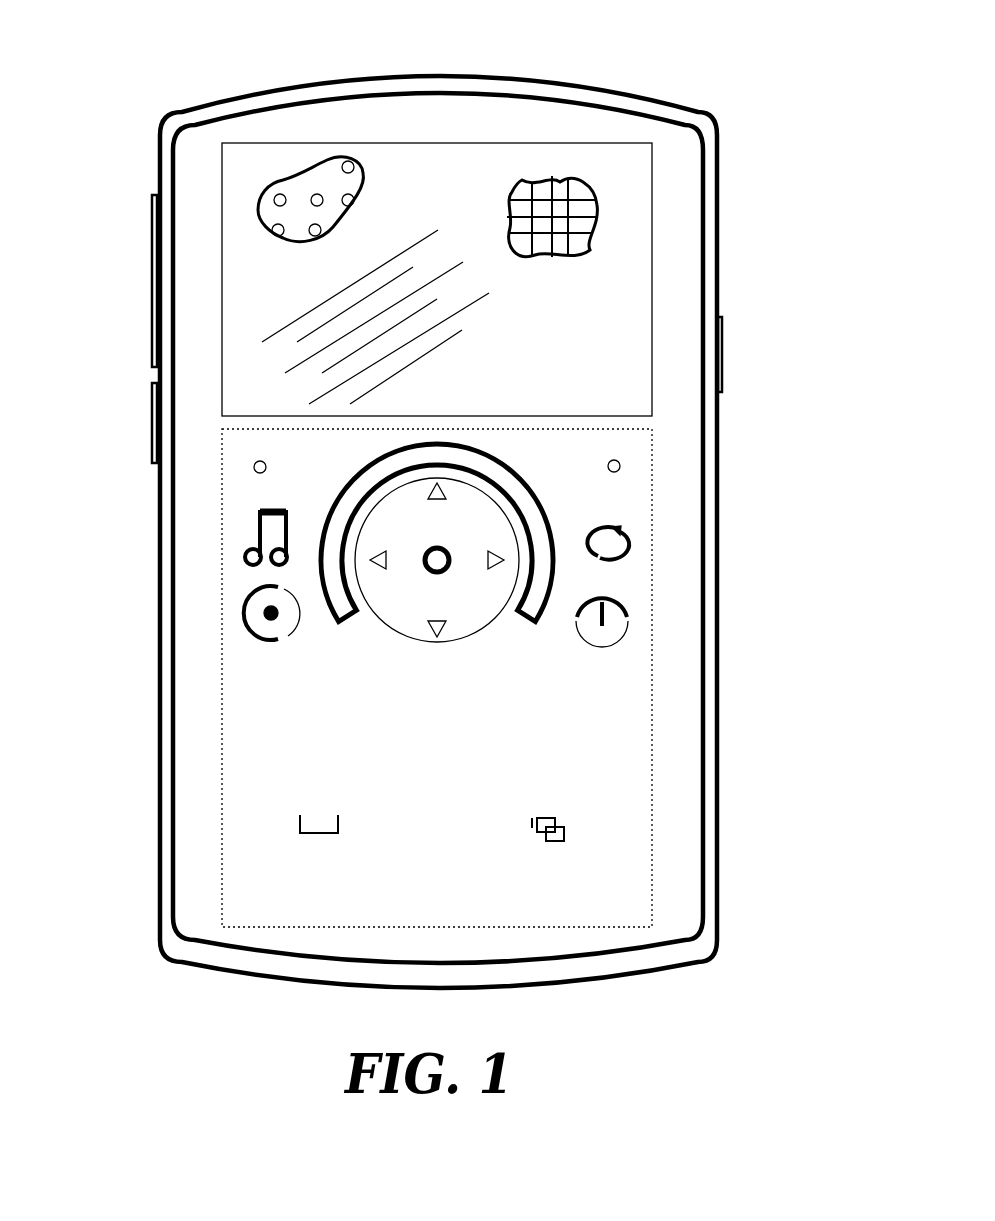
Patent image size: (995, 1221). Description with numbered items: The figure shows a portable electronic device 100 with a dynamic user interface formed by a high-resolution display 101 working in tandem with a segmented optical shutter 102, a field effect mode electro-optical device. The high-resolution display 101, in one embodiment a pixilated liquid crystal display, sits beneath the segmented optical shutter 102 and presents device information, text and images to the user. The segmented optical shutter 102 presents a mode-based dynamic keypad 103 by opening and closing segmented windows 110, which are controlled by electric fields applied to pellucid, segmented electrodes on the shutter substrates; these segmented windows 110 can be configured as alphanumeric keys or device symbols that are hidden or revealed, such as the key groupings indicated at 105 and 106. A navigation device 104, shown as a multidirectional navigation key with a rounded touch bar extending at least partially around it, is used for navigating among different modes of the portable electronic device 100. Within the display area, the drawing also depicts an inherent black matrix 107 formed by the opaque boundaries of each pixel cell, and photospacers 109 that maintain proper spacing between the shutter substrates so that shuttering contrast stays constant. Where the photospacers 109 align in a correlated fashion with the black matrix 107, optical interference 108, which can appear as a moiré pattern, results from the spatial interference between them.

The portable electronic device 100 is at (153, 492).
The high-resolution display 101 is at (627, 242).
The segmented optical shutter 102 is at (362, 853).
The mode-based dynamic keypad 103 is at (243, 731).
The navigation device 104 is at (408, 515).
The character keys 105 is at (624, 703).
The function keys 106 is at (652, 515).
The black matrix 107 is at (557, 197).
The optical interference 108 is at (308, 310).
The photospacers 109 is at (275, 203).
The segmented windows 110 is at (282, 678).